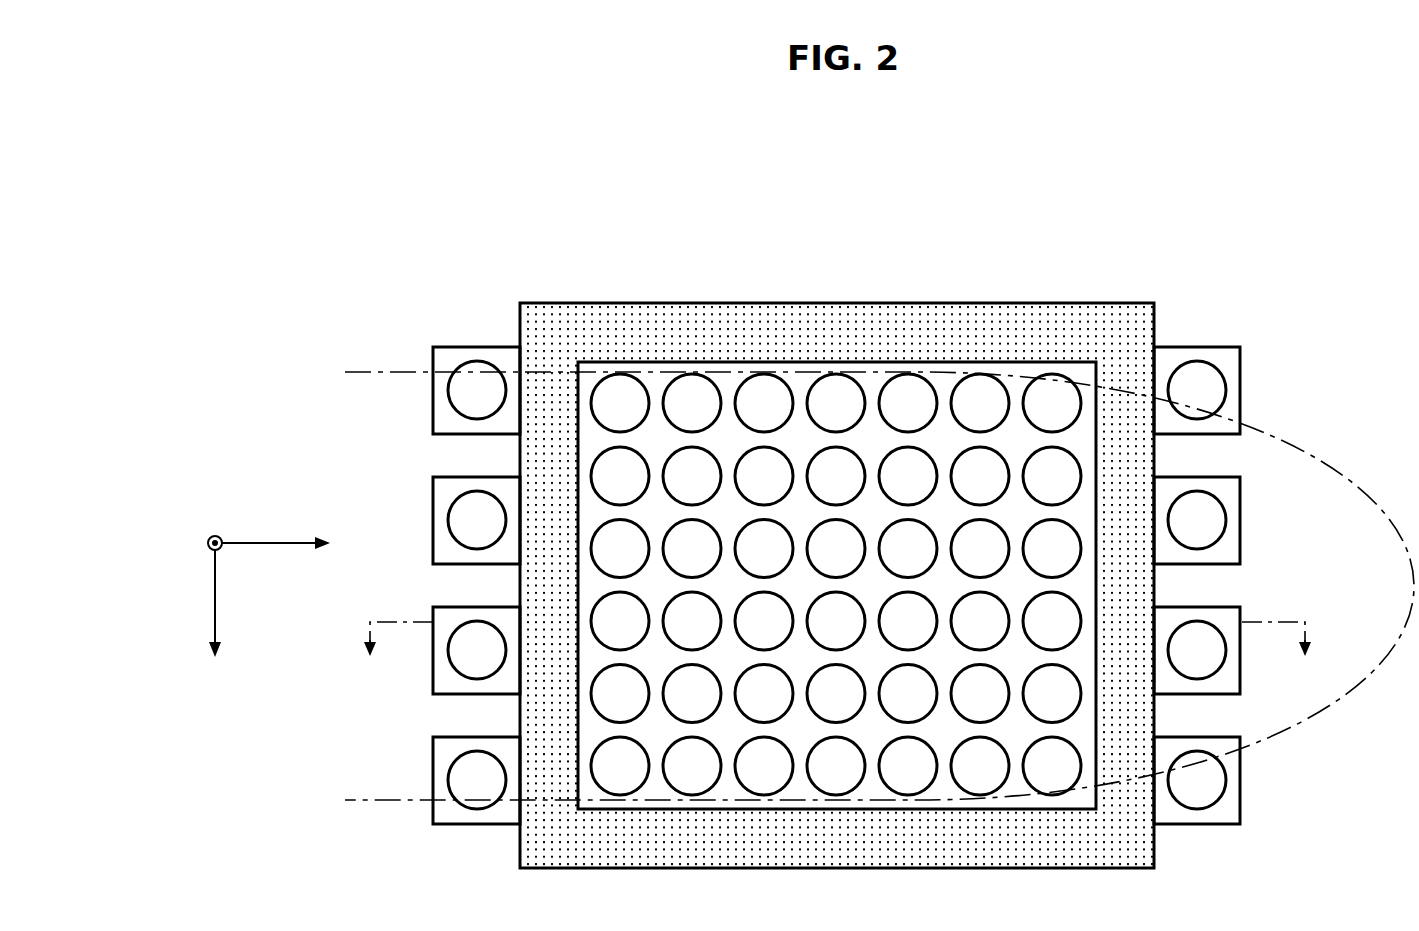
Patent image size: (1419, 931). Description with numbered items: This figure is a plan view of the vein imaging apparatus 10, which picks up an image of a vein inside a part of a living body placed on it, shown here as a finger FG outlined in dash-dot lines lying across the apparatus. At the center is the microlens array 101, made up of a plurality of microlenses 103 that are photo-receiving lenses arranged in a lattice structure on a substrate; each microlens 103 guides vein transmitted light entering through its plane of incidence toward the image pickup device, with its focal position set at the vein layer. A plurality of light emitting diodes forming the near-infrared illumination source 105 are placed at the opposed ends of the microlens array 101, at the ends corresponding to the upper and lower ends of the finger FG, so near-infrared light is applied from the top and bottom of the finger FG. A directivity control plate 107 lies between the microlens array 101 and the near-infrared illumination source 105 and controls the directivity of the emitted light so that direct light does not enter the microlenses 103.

The vein imaging apparatus 10 is at (851, 183).
The microlens array 101 is at (882, 343).
The microlens 103 is at (762, 400).
The near-infrared illumination source 105 is at (470, 345).
The directivity control plate 107 is at (1105, 303).
The finger FG is at (1313, 453).